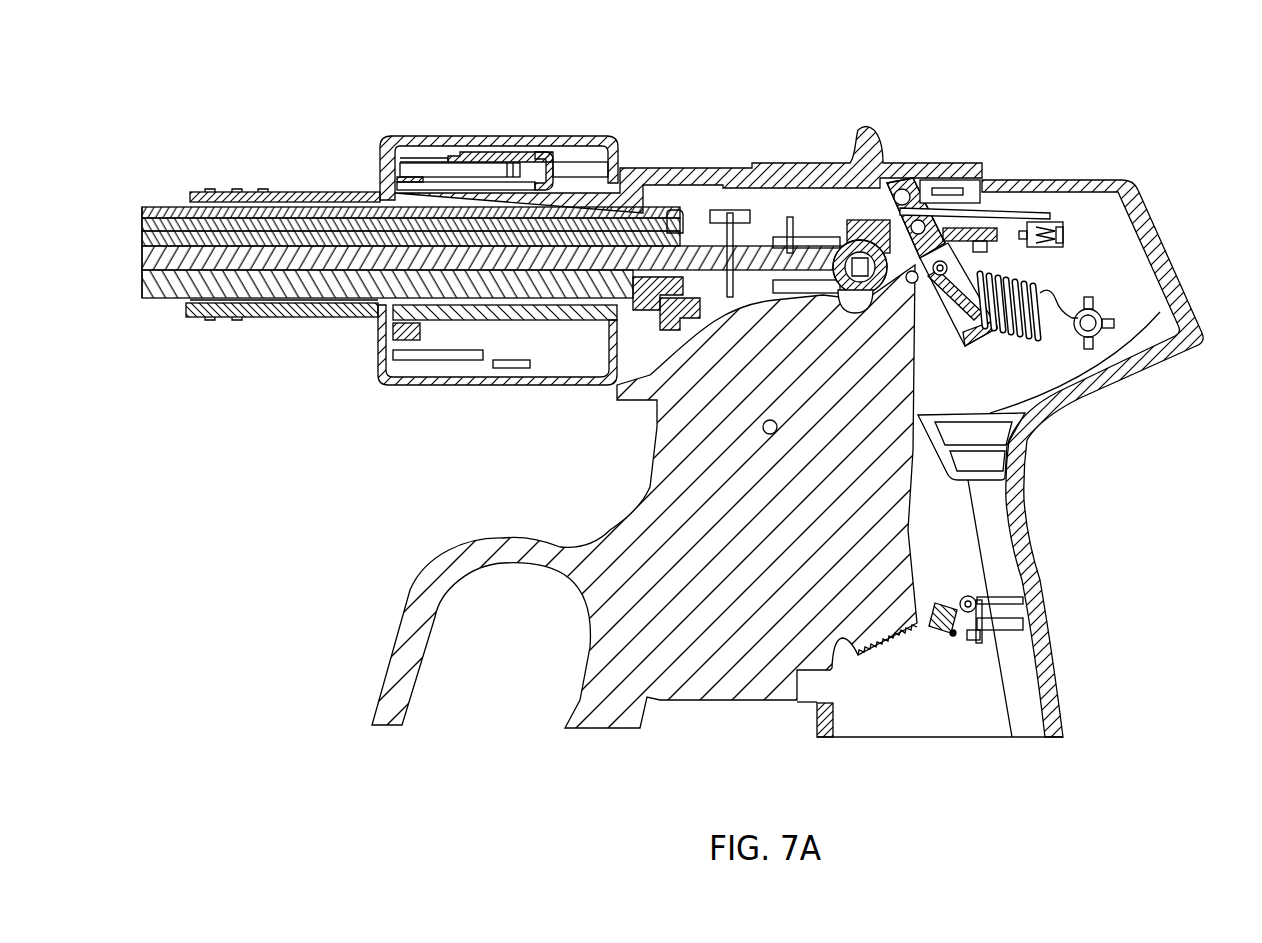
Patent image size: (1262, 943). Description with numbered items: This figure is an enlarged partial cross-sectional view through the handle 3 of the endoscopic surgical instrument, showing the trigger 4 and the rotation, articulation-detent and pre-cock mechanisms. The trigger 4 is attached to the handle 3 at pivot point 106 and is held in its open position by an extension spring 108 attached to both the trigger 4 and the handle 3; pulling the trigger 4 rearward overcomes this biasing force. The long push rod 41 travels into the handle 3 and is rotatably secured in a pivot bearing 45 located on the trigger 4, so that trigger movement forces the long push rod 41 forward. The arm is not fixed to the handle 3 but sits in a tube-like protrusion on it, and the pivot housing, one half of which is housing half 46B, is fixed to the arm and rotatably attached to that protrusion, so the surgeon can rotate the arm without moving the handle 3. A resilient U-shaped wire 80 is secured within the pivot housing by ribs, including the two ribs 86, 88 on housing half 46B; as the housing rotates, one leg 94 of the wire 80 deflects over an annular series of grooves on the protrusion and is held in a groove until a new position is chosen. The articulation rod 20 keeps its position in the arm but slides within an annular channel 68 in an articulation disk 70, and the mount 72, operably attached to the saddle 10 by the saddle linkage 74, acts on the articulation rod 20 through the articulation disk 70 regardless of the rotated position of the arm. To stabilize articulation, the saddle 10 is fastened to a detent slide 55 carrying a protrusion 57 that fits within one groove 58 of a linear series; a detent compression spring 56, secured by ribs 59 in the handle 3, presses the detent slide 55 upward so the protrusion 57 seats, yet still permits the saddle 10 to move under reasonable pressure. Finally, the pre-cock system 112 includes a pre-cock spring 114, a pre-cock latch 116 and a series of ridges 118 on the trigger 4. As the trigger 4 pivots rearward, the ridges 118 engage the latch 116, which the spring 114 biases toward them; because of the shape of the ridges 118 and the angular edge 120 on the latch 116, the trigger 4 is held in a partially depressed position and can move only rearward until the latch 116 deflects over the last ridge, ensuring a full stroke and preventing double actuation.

The handle 3 is at (1087, 390).
The trigger 4 is at (705, 552).
The saddle 10 is at (917, 165).
The articulation rod 20 is at (165, 207).
The long push rod 41 is at (162, 250).
The pivot bearing 45 is at (857, 250).
The housing half 46B is at (578, 140).
The detent slide 55 is at (993, 213).
The detent compression spring 56 is at (1067, 228).
The protrusion 57 is at (1050, 216).
The groove 58 is at (1028, 203).
The ribs 59 is at (1065, 233).
The annular channel 68 is at (640, 302).
The articulation disk 70 is at (690, 307).
The mount 72 is at (732, 207).
The saddle linkage 74 is at (910, 185).
The U-shaped wire 80 is at (478, 153).
The rib 86 is at (417, 175).
The rib 88 is at (513, 167).
The leg 94 is at (443, 187).
The pivot point 106 is at (765, 432).
The extension spring 108 is at (1041, 282).
The pre-cock system 112 is at (998, 580).
The pre-cock spring 114 is at (984, 620).
The pre-cock latch 116 is at (959, 644).
The ridges 118 is at (883, 645).
The angular edge 120 is at (929, 606).